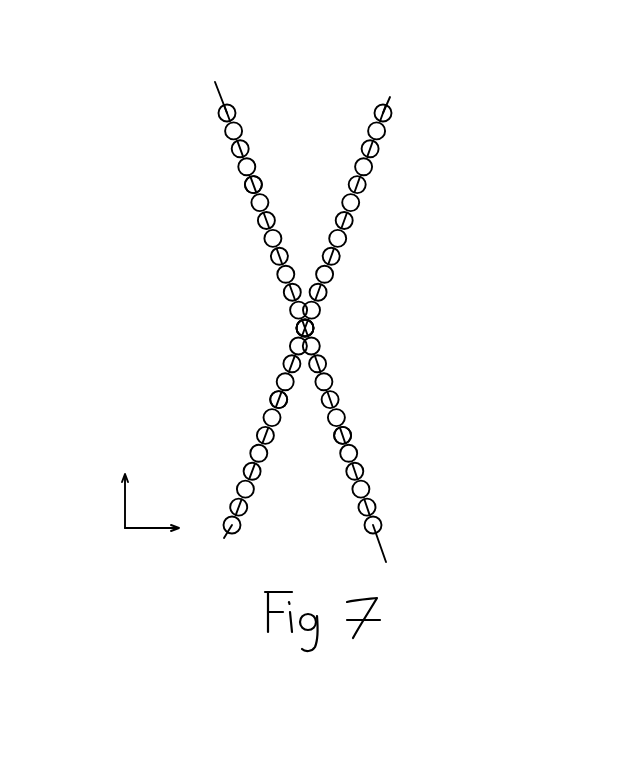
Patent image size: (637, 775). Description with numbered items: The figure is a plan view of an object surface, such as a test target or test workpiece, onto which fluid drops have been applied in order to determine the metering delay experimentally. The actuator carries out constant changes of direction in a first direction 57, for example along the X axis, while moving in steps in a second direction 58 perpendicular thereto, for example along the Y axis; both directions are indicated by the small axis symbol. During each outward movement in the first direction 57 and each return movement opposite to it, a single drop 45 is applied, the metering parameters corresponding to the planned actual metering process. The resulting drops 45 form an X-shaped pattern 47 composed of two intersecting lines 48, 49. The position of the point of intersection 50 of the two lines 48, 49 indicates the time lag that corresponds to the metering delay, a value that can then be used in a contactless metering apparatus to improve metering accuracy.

The drop 45 is at (257, 184).
The X-shaped pattern 47 is at (412, 241).
The line 48 is at (220, 94).
The line 49 is at (394, 84).
The point of intersection 50 is at (322, 327).
The first direction 57 is at (136, 529).
The second direction 58 is at (125, 505).